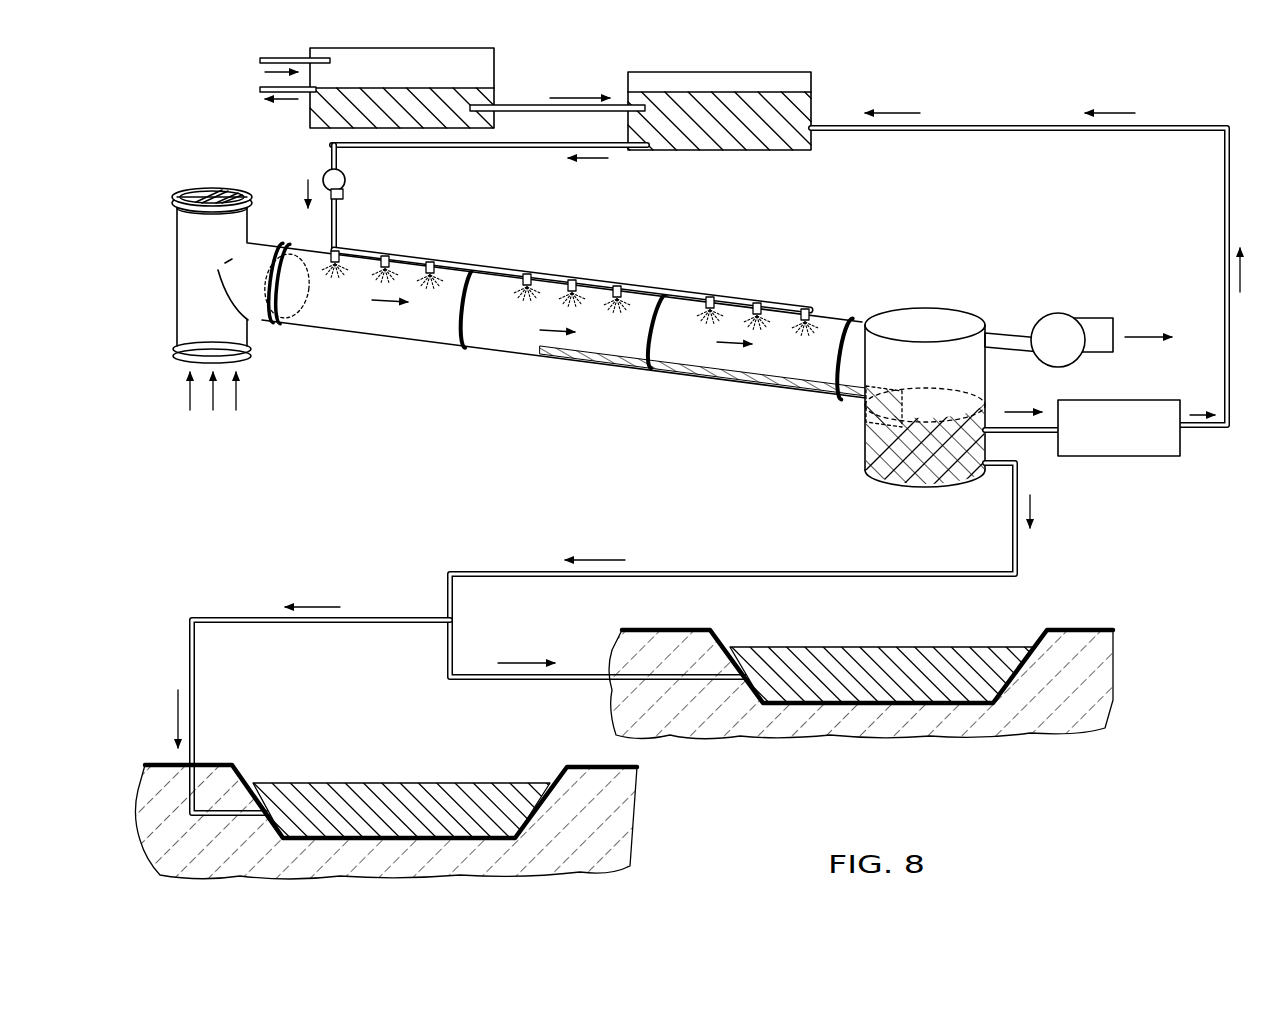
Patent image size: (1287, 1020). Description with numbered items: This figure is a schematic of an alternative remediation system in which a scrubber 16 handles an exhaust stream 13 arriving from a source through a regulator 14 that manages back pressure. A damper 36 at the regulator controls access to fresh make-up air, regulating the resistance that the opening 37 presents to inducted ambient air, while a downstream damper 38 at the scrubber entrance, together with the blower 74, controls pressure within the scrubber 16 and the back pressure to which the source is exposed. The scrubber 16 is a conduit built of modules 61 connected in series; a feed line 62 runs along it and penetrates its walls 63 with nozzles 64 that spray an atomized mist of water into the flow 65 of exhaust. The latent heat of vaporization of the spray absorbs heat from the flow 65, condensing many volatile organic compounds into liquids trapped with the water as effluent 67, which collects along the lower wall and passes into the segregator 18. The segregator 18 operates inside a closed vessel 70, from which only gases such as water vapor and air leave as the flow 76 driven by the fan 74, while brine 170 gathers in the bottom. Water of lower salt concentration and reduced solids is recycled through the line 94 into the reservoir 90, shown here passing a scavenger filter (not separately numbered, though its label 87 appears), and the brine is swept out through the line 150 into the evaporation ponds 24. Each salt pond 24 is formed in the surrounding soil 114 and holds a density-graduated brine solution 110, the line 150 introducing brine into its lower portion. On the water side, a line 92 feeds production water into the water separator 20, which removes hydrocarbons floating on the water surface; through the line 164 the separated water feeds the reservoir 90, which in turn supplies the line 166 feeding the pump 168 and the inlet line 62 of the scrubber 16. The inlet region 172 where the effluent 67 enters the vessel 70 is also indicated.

The exhaust stream 13 is at (188, 393).
The regulator 14 is at (148, 240).
The scrubber 16 is at (508, 243).
The segregator 18 is at (927, 362).
The water separator 20 is at (402, 88).
The salt pond 24 is at (928, 637).
The damper 36 is at (228, 195).
The opening 37 is at (200, 196).
The downstream damper 38 is at (305, 302).
The module 61 is at (416, 246).
The feed line 62 is at (685, 285).
The wall 63 is at (386, 256).
The nozzle 64 is at (432, 262).
The flow 65 is at (548, 345).
The effluent 67 is at (773, 386).
The chamber 70 is at (930, 310).
The blower 74 is at (1062, 326).
The flow of vapors 76 is at (1140, 335).
The scavenger filter 87 is at (1125, 458).
The reservoir 90 is at (775, 80).
The inlet line 92 is at (272, 58).
The line 94 is at (1213, 435).
The brine solution 110 is at (878, 672).
The surrounding soil 114 is at (1015, 716).
The line 150 is at (1018, 548).
The line 164 is at (255, 90).
The line 166 is at (533, 150).
The pump 168 is at (348, 178).
The brine 170 is at (925, 485).
The inlet 172 is at (868, 420).